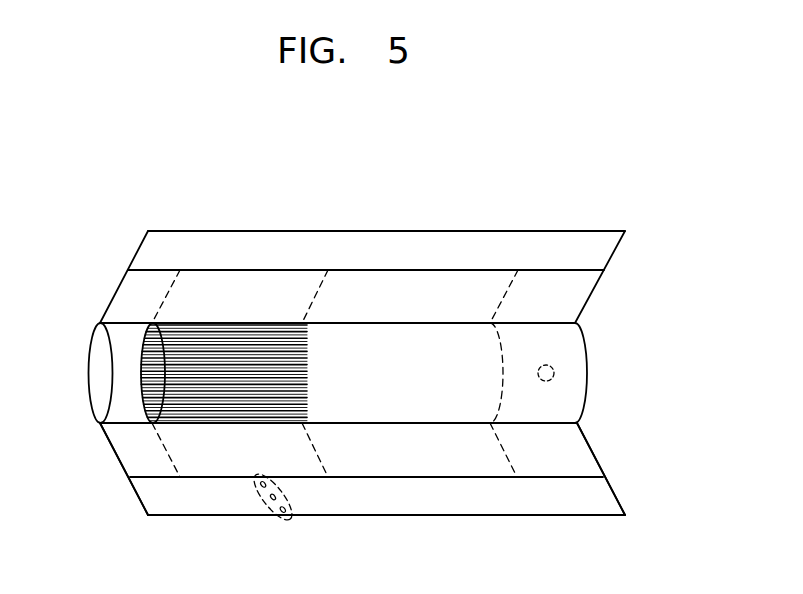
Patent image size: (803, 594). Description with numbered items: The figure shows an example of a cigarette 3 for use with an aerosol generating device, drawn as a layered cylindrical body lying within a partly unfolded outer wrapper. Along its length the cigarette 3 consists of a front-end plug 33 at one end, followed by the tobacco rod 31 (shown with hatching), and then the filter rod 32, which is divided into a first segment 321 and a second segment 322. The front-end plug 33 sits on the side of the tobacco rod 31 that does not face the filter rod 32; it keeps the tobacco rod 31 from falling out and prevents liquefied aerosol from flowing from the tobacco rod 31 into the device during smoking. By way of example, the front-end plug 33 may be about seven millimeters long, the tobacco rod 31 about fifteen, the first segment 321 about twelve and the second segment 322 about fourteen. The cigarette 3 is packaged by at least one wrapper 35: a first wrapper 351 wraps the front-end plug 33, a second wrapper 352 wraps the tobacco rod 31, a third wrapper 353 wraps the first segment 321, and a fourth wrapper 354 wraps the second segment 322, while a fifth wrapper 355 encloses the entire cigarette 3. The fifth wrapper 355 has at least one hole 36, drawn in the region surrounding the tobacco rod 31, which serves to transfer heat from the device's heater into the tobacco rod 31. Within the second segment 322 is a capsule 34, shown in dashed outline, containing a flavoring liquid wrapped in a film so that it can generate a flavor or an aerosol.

The cigarette 3 is at (608, 200).
The tobacco rod 31 is at (223, 347).
The filter rod 32 is at (442, 178).
The first segment 321 is at (453, 348).
The second segment 322 is at (538, 338).
The front-end plug 33 is at (128, 335).
The capsule 34 is at (554, 373).
The wrapper 35 is at (619, 463).
The first wrapper 351 is at (130, 450).
The second wrapper 352 is at (213, 458).
The third wrapper 353 is at (413, 458).
The fourth wrapper 354 is at (537, 458).
The fifth wrapper 355 is at (348, 498).
The hole 36 is at (267, 507).